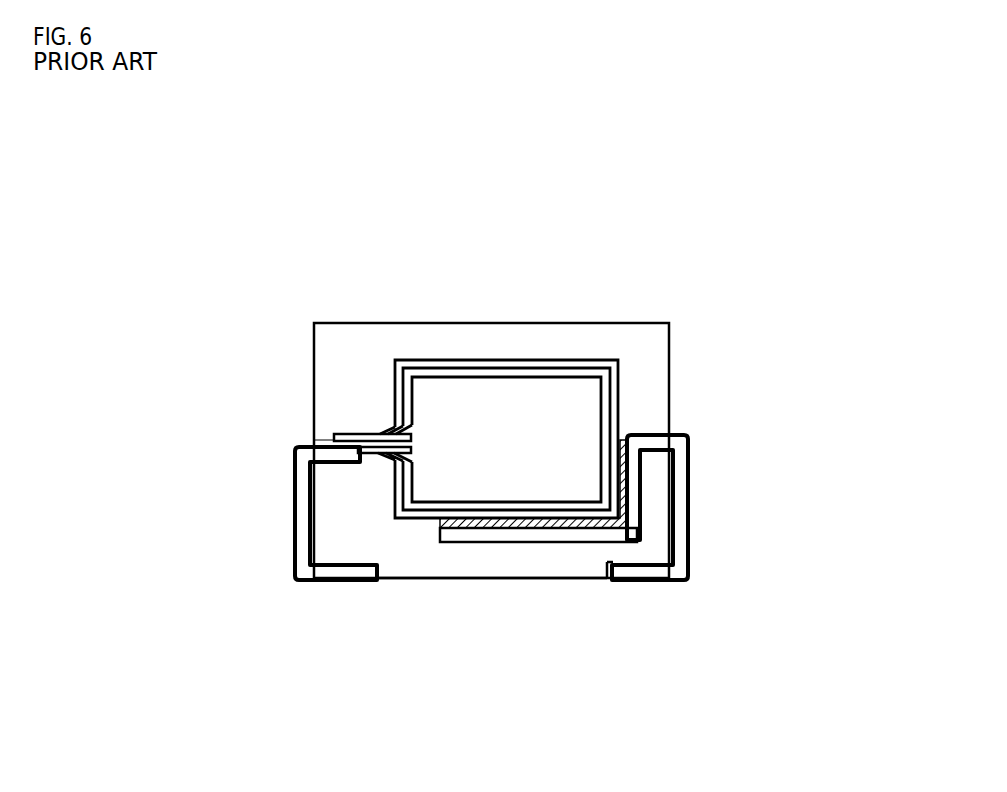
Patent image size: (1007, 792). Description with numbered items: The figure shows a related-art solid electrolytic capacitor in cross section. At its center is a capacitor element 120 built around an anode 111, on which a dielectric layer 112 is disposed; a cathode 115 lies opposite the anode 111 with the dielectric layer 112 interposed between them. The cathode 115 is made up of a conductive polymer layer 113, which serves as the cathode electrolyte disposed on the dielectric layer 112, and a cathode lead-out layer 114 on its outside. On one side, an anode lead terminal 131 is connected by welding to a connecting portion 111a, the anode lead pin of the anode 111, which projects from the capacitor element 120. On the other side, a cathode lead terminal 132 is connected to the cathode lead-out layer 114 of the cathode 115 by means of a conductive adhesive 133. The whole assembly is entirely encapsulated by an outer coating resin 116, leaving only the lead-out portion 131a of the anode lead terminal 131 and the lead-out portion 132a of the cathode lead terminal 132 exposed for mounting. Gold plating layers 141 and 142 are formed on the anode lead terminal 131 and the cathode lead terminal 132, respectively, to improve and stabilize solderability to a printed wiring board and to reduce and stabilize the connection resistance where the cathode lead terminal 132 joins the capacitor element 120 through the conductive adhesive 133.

The anode 111 is at (521, 356).
The connecting portion 111a is at (352, 436).
The dielectric layer 112 is at (541, 375).
The conductive polymer layer 113 is at (474, 368).
The cathode lead-out layer 114 is at (423, 361).
The cathode 115 is at (506, 356).
The outer coating resin 116 is at (452, 579).
The capacitor element 120 is at (412, 524).
The anode lead terminal 131 is at (324, 445).
The lead-out portion of anode lead terminal 131a is at (320, 582).
The cathode lead terminal 132 is at (657, 434).
The lead-out portion of cathode lead terminal 132a is at (648, 582).
The conductive adhesive 133 is at (512, 543).
The gold plating layer 141 is at (295, 541).
The gold plating layer 142 is at (690, 553).